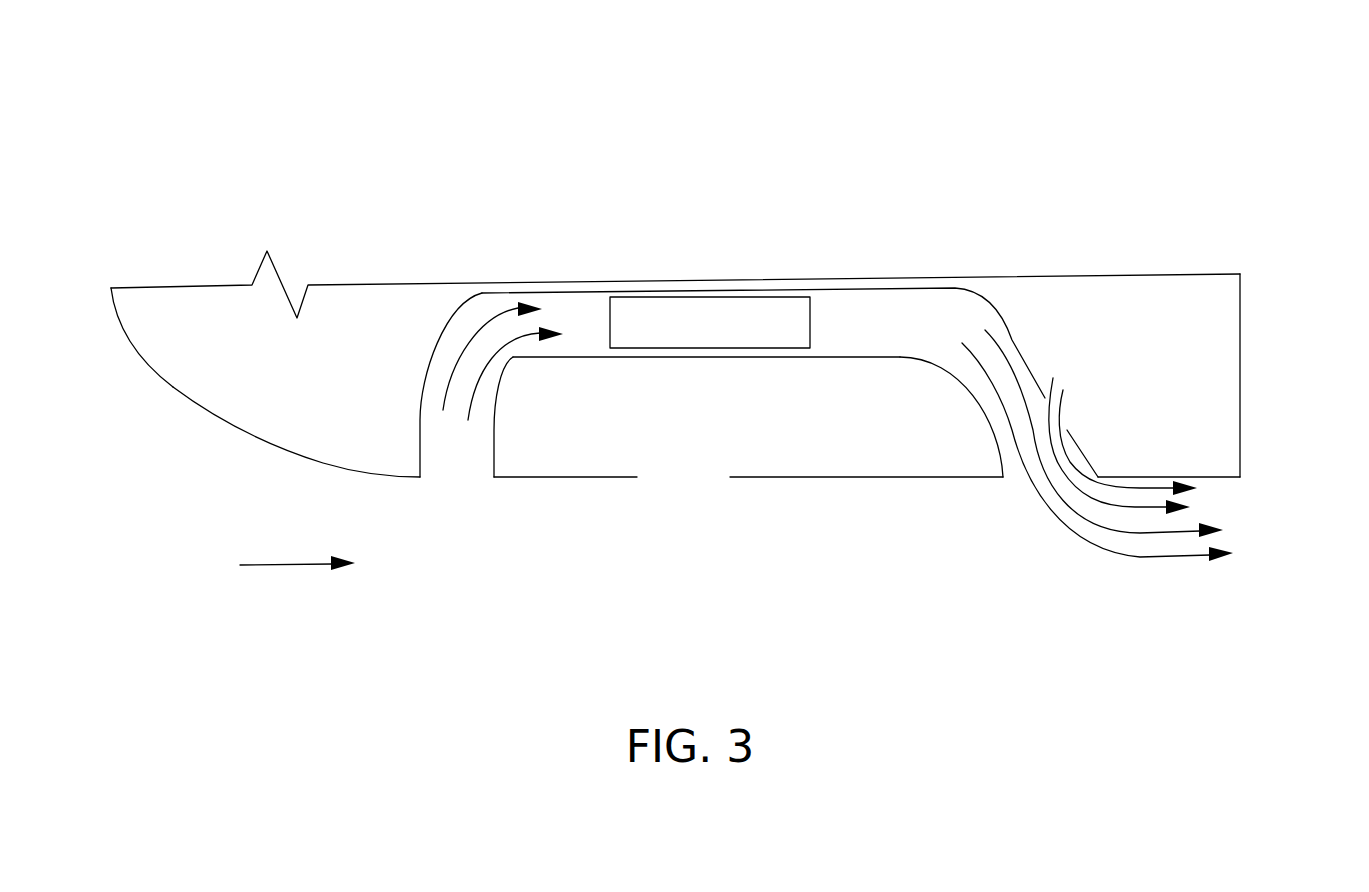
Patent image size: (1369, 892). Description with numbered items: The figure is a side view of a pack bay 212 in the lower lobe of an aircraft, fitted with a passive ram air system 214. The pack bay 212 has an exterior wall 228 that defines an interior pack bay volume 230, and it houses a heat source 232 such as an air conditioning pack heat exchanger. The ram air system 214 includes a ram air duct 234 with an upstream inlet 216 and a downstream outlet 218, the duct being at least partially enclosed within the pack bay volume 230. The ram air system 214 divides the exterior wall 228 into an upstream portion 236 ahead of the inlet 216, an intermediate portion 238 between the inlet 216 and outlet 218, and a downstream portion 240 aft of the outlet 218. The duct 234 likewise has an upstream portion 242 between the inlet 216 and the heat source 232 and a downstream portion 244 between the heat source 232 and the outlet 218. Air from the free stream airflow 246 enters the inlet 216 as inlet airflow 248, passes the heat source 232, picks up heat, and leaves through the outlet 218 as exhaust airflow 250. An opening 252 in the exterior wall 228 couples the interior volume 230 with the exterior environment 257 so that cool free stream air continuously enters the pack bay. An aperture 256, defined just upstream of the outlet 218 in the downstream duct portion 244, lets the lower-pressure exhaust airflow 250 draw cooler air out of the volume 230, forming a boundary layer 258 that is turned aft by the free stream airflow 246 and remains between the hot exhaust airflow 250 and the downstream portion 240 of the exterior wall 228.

The ram air system 214 is at (185, 175).
The pack bay 212 is at (167, 286).
The inlet 216 is at (451, 490).
The outlet 218 is at (1016, 500).
The exterior wall 228 is at (128, 347).
The pack bay volume 230 is at (280, 378).
The heat source 232 is at (693, 310).
The ram air duct 234 is at (557, 357).
The upstream portion 236 is at (223, 437).
The intermediate portion 238 is at (815, 480).
The downstream portion 240 is at (1230, 477).
The upstream portion 242 is at (450, 330).
The downstream portion 244 is at (972, 298).
The free stream airflow 246 is at (278, 567).
The inlet airflow 248 is at (485, 324).
The exhaust airflow 250 is at (1100, 555).
The opening 252 is at (681, 506).
The aperture 256 is at (1047, 368).
The exterior environment 257 is at (375, 667).
The boundary layer 258 is at (1155, 488).